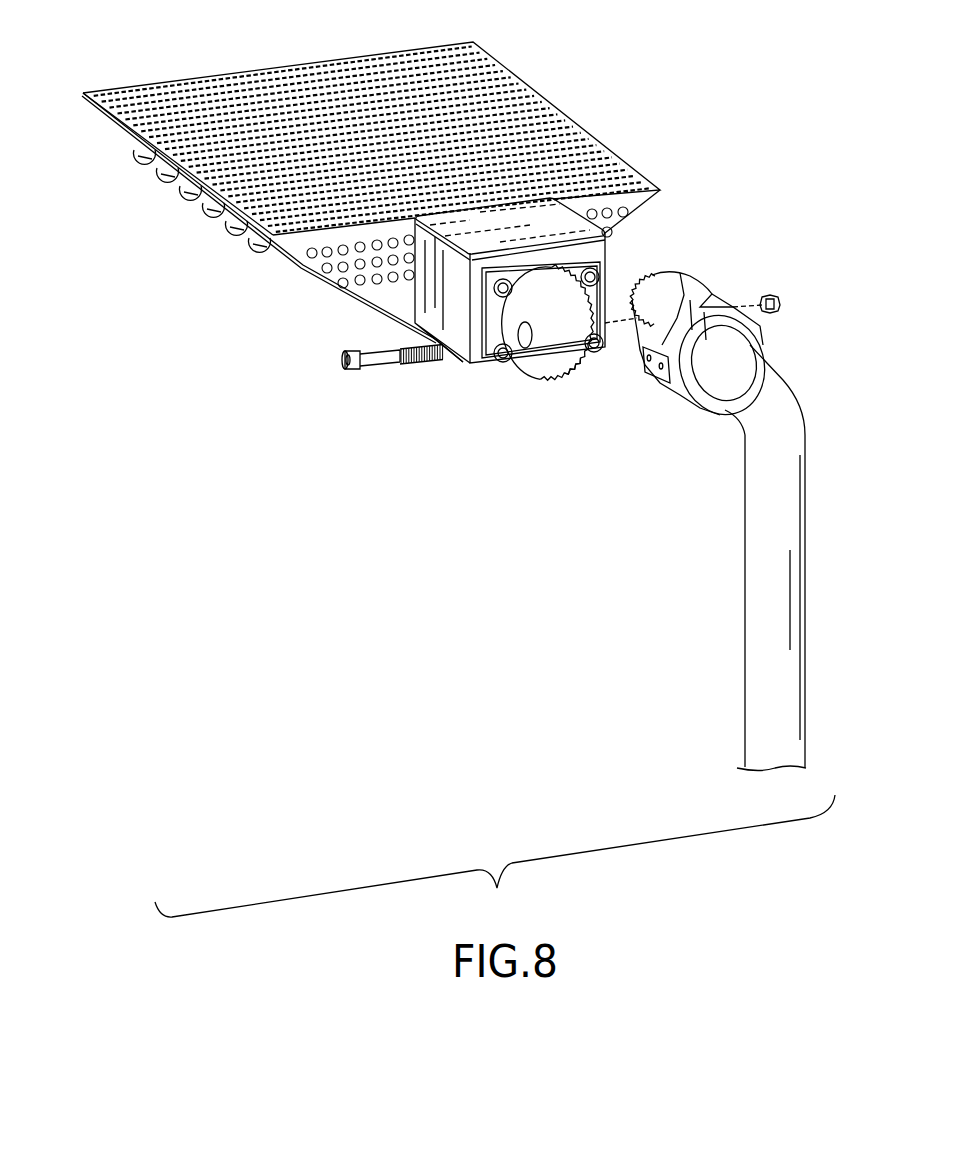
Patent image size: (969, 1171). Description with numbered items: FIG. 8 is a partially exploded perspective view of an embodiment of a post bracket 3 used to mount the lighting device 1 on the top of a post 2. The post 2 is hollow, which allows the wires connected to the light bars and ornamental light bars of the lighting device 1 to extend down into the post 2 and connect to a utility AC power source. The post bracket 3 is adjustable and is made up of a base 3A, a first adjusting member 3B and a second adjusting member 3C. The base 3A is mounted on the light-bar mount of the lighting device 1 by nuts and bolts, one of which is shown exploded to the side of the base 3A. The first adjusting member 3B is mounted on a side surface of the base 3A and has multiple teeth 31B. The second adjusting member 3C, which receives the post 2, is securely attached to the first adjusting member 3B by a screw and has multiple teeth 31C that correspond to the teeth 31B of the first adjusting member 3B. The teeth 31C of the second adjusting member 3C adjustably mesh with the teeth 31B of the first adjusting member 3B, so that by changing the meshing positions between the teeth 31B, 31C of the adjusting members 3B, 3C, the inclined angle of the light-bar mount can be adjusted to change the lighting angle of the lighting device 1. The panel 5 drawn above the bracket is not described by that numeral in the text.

The lighting device 1 is at (280, 285).
The post 2 is at (735, 620).
The post bracket 3 is at (452, 363).
The base 3A is at (551, 213).
The first adjusting member 3B is at (537, 362).
The second adjusting member 3C is at (693, 295).
The teeth of the first adjusting member 31B is at (590, 358).
The teeth of the second adjusting member 31C is at (645, 270).
The heat sink panel 5 is at (313, 62).